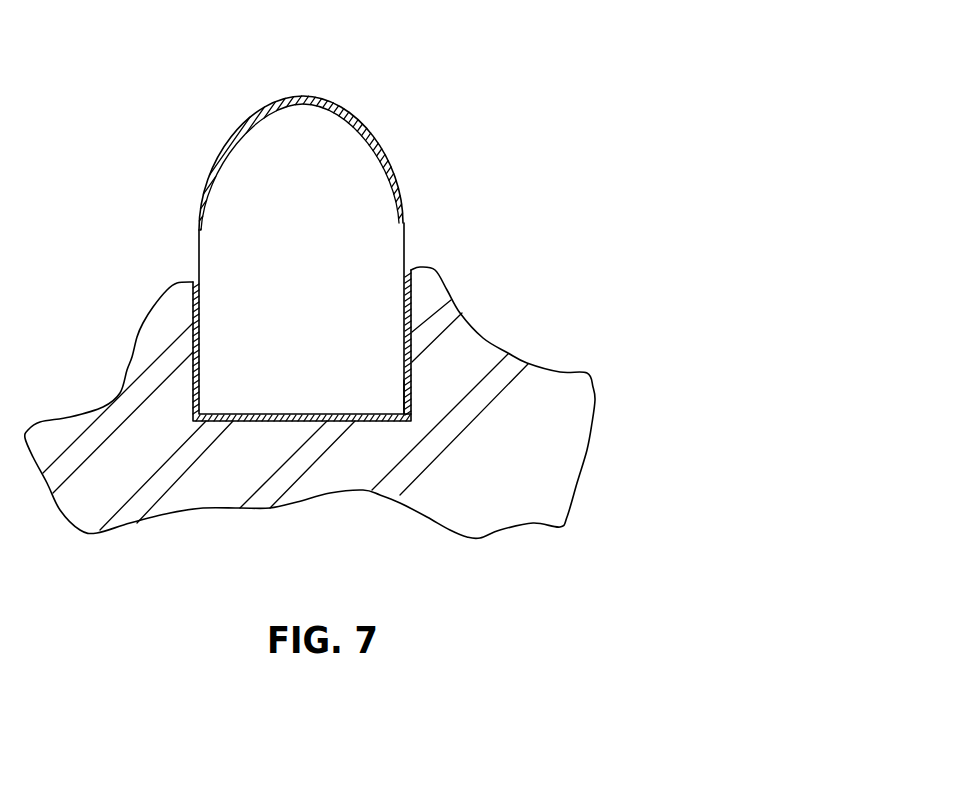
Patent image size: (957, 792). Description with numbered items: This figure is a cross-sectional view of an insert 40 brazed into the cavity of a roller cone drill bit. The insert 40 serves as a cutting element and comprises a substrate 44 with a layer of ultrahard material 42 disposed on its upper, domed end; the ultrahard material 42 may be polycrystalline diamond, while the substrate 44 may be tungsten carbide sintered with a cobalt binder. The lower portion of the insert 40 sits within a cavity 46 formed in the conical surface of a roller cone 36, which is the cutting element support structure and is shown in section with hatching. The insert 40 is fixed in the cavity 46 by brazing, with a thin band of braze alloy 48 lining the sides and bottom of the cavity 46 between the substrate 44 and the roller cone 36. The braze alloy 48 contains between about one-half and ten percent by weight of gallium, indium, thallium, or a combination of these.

The roller cone 36 is at (428, 332).
The insert 40 is at (317, 221).
The layer of ultrahard material 42 is at (338, 105).
The substrate 44 is at (317, 190).
The cavity 46 is at (428, 398).
The braze alloy 48 is at (407, 272).